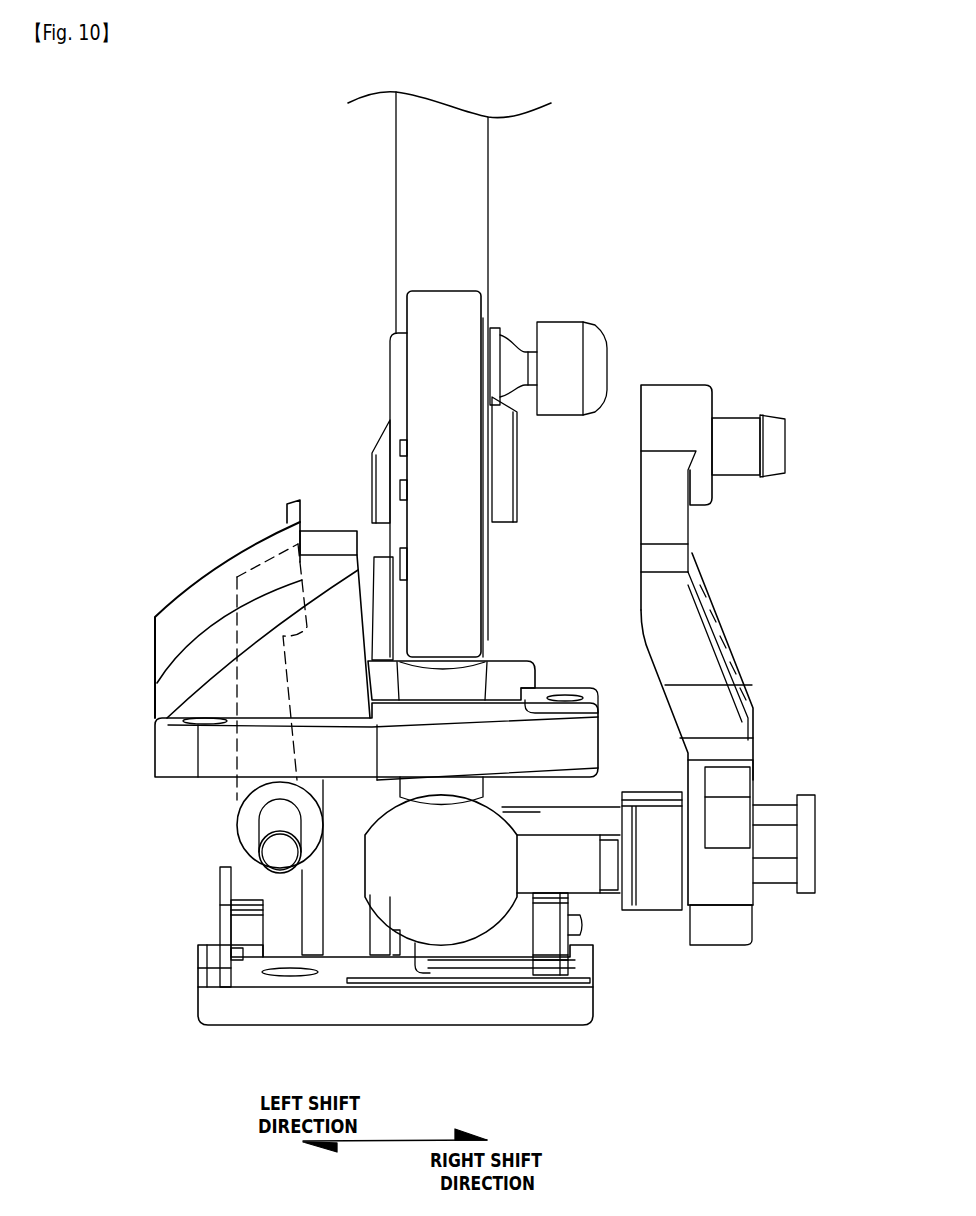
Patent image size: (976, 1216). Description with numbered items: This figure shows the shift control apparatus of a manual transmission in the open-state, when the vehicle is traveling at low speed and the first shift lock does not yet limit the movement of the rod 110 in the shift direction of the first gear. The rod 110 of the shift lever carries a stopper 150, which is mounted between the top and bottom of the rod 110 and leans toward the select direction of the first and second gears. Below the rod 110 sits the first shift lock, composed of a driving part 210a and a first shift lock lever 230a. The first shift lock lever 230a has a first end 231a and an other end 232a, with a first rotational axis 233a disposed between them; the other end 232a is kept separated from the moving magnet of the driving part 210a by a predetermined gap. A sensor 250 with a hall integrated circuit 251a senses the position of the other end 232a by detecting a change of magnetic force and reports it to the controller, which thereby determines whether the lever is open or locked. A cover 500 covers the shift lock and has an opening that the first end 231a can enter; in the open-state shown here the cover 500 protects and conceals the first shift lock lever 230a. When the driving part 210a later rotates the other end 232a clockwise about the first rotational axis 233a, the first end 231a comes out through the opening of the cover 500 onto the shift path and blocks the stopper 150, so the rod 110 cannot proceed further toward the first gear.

The rod 110 is at (478, 220).
The stopper 150 is at (377, 557).
The first end of first shift lock lever 231a is at (312, 575).
The cover 500 is at (173, 605).
The first shift lock lever 230a is at (237, 806).
The first rotational axis 233a is at (280, 856).
The sensor 250 is at (226, 928).
The hall integrated circuit 251a is at (240, 958).
The other end of first shift lock lever 232a is at (312, 930).
The driving part 210a is at (488, 957).